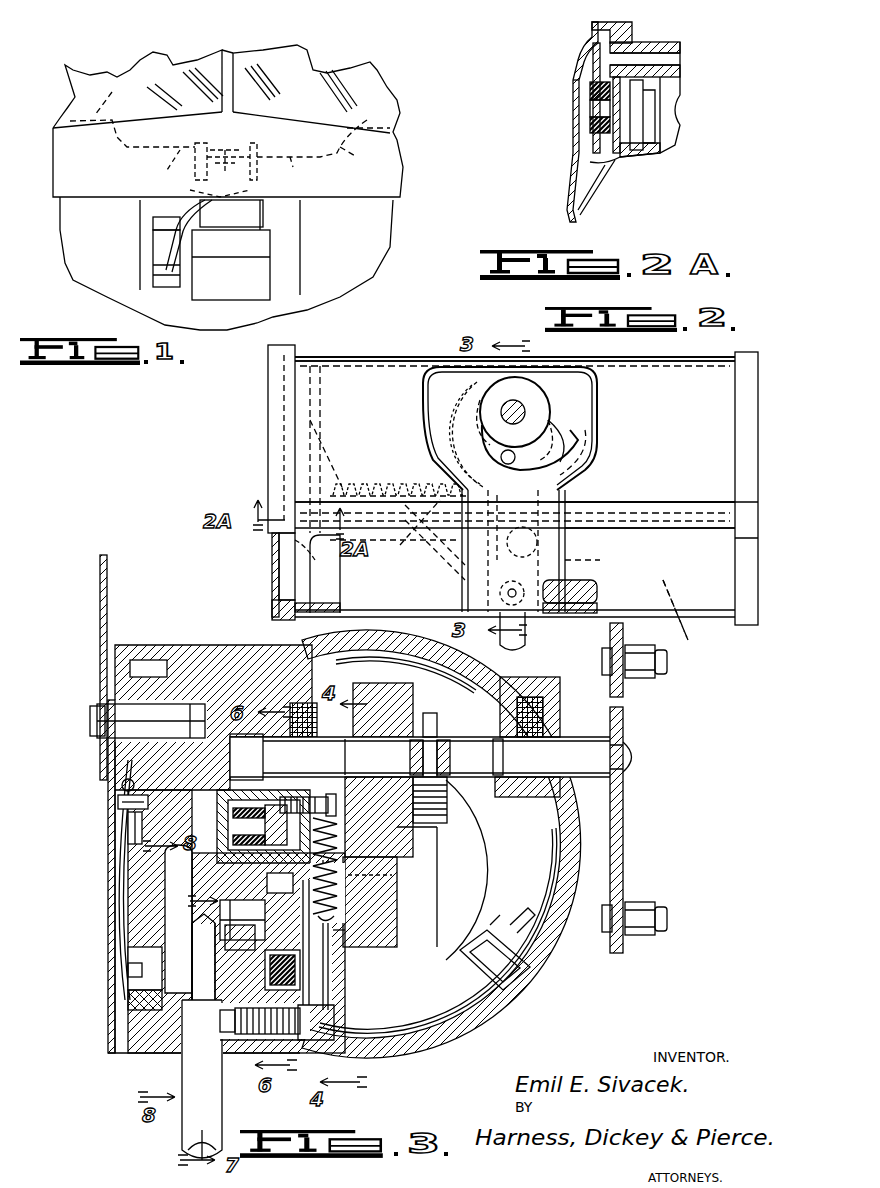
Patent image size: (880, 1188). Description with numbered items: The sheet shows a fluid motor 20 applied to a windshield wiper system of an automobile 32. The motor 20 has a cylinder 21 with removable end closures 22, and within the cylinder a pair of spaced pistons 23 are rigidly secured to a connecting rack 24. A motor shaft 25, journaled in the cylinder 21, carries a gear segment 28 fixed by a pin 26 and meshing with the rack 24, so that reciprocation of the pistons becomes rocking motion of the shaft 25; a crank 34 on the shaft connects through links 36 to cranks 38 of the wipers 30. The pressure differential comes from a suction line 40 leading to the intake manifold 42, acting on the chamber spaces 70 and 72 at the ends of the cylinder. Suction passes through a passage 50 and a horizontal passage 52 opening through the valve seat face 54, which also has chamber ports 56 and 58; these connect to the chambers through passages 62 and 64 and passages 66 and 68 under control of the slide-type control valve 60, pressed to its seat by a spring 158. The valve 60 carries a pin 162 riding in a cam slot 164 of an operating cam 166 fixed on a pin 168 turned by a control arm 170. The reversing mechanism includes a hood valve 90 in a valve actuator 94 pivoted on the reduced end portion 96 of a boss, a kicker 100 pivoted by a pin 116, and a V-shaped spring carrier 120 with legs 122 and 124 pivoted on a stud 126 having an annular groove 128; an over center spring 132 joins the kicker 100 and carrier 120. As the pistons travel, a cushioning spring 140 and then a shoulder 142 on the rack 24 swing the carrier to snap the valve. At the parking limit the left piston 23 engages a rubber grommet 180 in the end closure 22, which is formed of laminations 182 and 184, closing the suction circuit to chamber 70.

In FIG. 1, the motor 20 is at (237, 148).
In FIG. 2, the motor 20 is at (674, 350).
In FIG. 2, the cylinder 21 is at (400, 357).
In FIG. 3, the cylinder 21 is at (385, 645).
In FIG. 2, the end closures 22 is at (752, 445).
In FIG. 2A, the pistons 23 is at (655, 95).
In FIG. 2, the pistons 23 is at (600, 400).
In FIG. 2, the connecting rack 24 is at (355, 485).
In FIG. 3, the connecting rack 24 is at (397, 900).
In FIG. 3, the motor shaft 25 is at (368, 735).
In FIG. 3, the pin 26 is at (444, 825).
In FIG. 3, the gear segment 28 is at (420, 857).
In FIG. 1, the windshield wipers 30 is at (367, 120).
In FIG. 1, the automobile 32 is at (253, 112).
In FIG. 3, the crank 34 is at (623, 720).
In FIG. 1, the links 36 is at (223, 173).
In FIG. 1, the cranks 38 is at (105, 155).
In FIG. 1, the suction line 40 is at (208, 206).
In FIG. 3, the suction line 40 is at (222, 1102).
In FIG. 1, the intake manifold 42 is at (165, 242).
In FIG. 3, the passage 50 is at (135, 972).
In FIG. 3, the horizontal passage 52 is at (190, 957).
In FIG. 3, the valve seat face 54 is at (242, 920).
In FIG. 2, the chamber port 56 is at (590, 565).
In FIG. 2, the chamber port 58 is at (462, 565).
In FIG. 3, the control valve 60 is at (115, 936).
In FIG. 2, the passage 62 is at (432, 540).
In FIG. 2A, the passage 64 is at (685, 55).
In FIG. 2, the passage 64 is at (395, 550).
In FIG. 2, the passage 66 is at (565, 505).
In FIG. 2, the passage 68 is at (640, 526).
In FIG. 2A, the chamber space 70 is at (595, 117).
In FIG. 2, the chamber space 70 is at (272, 580).
In FIG. 2, the chamber space 72 is at (590, 612).
In FIG. 3, the hood valve 90 is at (283, 970).
In FIG. 3, the valve actuator 94 is at (268, 953).
In FIG. 3, the reduced outer end portion 96 is at (280, 883).
In FIG. 3, the kicker 100 is at (336, 802).
In FIG. 3, the pin 116 is at (205, 885).
In FIG. 3, the spring carrier 120 is at (343, 962).
In FIG. 2, the leg 122 is at (585, 440).
In FIG. 2, the leg 124 is at (418, 482).
In FIG. 3, the stud 126 is at (330, 1018).
In FIG. 3, the annular groove 128 is at (320, 1000).
In FIG. 3, the over center spring 132 is at (338, 822).
In FIG. 2, the cushioning spring 140 is at (590, 458).
In FIG. 2, the shoulder 142 is at (338, 580).
In FIG. 3, the spring 158 is at (128, 975).
In FIG. 3, the pin 162 is at (128, 822).
In FIG. 2, the cam slot 164 is at (460, 430).
In FIG. 3, the cam slot 164 is at (118, 801).
In FIG. 2, the operating cam 166 is at (560, 408).
In FIG. 3, the operating cam 166 is at (122, 783).
In FIG. 3, the pin 168 is at (118, 700).
In FIG. 3, the control arm 170 is at (175, 897).
In FIG. 2A, the rubber grommet 180 is at (590, 92).
In FIG. 2A, the lamination 182 is at (573, 76).
In FIG. 2A, the lamination 184 is at (590, 133).